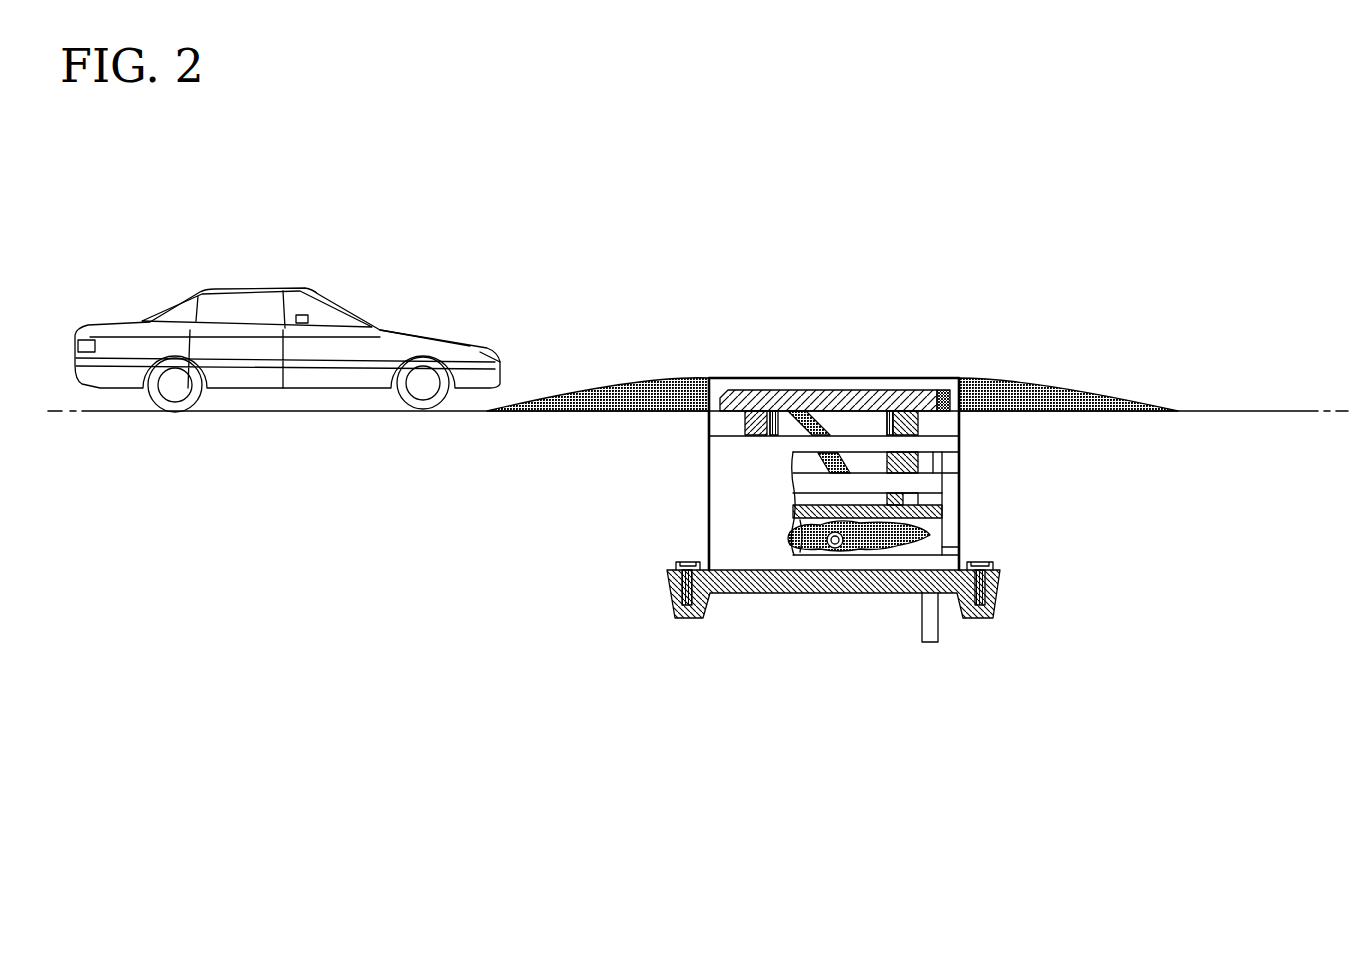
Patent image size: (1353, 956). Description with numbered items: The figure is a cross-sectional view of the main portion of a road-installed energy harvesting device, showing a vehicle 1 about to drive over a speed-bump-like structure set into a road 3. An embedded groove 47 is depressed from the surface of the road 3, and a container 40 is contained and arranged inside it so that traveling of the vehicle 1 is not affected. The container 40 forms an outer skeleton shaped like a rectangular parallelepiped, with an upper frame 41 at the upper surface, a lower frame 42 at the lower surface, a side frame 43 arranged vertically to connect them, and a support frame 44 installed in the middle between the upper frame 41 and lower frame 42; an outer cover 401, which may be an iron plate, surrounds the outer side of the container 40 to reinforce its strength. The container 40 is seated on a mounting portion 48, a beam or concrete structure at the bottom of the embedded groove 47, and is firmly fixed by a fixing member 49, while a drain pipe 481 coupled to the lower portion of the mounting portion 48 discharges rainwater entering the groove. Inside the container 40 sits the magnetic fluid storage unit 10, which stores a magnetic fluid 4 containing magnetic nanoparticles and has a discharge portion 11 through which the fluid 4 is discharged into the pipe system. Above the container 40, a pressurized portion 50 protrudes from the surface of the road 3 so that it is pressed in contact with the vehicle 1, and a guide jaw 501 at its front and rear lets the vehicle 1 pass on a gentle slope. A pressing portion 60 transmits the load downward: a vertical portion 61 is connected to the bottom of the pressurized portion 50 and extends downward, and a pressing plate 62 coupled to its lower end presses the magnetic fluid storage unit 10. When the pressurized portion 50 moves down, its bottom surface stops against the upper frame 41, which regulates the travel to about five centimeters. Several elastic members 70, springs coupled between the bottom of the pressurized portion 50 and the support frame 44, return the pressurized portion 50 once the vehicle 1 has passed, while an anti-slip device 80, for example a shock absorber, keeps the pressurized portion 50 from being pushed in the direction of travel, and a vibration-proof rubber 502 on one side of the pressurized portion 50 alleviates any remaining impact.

The vehicle 1 is at (311, 290).
The road 3 is at (1262, 407).
The guide jaw 501 is at (612, 398).
The embedded groove 47 is at (962, 405).
The pressurized portion 50 is at (790, 392).
The vibration-proof rubber 502 is at (950, 392).
The pressing portion 60 is at (850, 419).
The vertical portion 61 is at (891, 418).
The pressing plate 62 is at (937, 458).
The anti-slip device 80 is at (803, 413).
The elastic member 70 is at (887, 428).
The container 40 is at (899, 499).
The upper frame 41 is at (960, 445).
The support frame 44 is at (960, 483).
The side frame 43 is at (960, 510).
The lower frame 42 is at (918, 549).
The magnetic fluid storage unit 10 is at (887, 550).
The discharge portion 11 is at (836, 549).
The magnetic fluid 4 is at (805, 552).
The outer cover 401 is at (750, 560).
The mounting portion 48 is at (672, 608).
The fixing member 49 is at (676, 562).
The drain pipe 481 is at (930, 643).